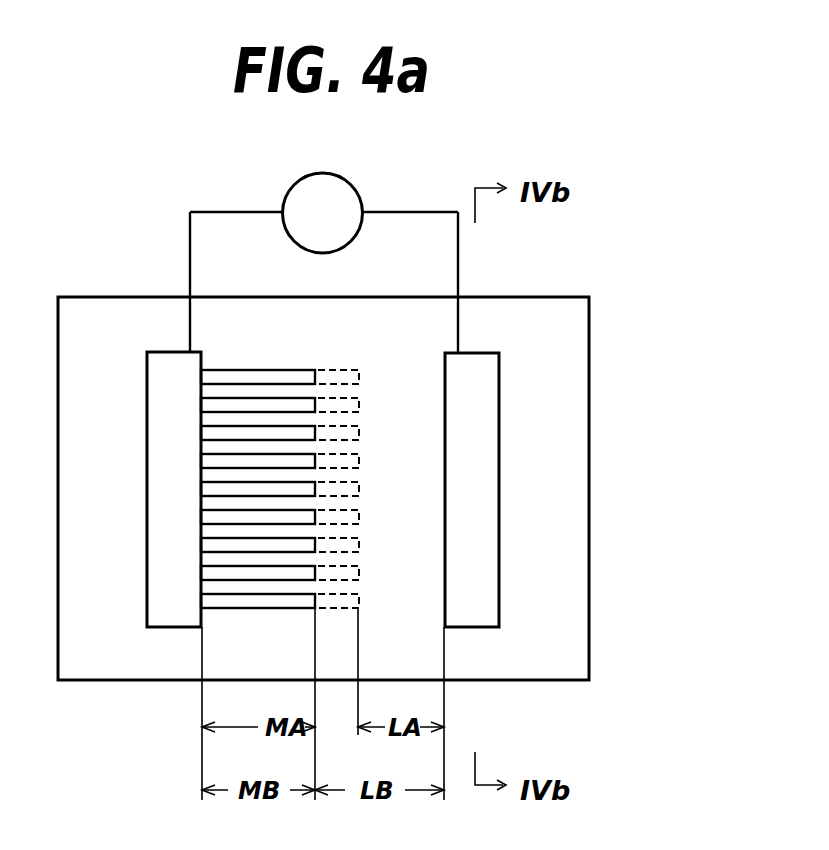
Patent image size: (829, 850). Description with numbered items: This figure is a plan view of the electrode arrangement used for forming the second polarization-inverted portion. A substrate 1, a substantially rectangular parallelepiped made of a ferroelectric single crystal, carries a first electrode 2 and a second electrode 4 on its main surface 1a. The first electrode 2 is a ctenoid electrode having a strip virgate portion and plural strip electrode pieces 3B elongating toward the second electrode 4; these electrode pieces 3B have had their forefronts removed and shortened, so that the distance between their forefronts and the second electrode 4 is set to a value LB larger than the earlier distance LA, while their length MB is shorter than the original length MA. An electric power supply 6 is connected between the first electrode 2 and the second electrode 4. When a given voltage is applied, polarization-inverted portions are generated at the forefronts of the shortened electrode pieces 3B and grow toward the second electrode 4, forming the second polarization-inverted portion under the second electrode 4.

The substrate 1 is at (574, 282).
The main surface 1a is at (522, 323).
The first electrode 2 is at (168, 367).
The electrode pieces 3B is at (240, 403).
The second electrode 4 is at (450, 363).
The electric power supply 6 is at (355, 183).